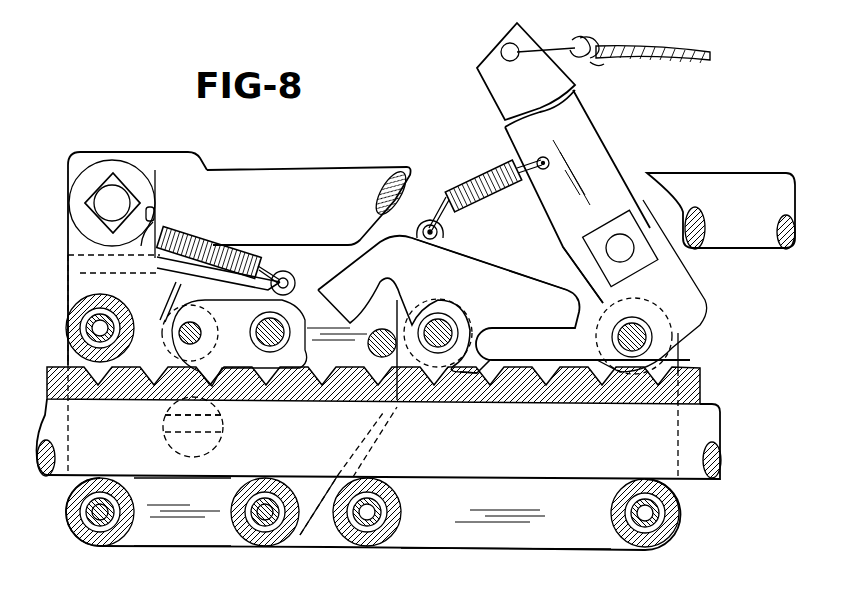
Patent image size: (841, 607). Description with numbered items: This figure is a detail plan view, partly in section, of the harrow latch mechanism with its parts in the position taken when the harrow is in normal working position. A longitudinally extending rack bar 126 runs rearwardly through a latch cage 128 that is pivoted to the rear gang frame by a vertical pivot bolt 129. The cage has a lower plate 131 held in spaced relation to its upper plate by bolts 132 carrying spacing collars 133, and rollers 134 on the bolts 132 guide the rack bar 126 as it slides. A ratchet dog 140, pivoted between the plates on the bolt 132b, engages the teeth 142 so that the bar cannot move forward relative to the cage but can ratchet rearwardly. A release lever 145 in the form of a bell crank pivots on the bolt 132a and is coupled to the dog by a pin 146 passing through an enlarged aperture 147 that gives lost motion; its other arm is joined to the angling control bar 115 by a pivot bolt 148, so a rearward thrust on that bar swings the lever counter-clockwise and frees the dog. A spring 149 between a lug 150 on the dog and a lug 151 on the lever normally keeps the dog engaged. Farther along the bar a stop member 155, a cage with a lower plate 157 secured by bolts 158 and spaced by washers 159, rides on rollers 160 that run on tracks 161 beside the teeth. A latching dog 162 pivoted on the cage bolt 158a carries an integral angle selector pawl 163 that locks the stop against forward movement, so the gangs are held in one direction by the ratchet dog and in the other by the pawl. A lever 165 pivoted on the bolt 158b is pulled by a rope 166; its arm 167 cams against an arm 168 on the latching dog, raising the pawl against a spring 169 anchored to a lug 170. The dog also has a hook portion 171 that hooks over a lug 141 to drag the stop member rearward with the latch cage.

The angling control bar 115 is at (248, 182).
The rack bar 126 is at (379, 423).
The latch cage 128 is at (144, 551).
The pivot bolt 129 is at (222, 441).
The lower plate 131 is at (205, 538).
The bolts 132 is at (95, 515).
The bolt 132a is at (90, 325).
The bolt 132b is at (285, 325).
The spacing collars 133 is at (93, 338).
The rollers 134 is at (75, 305).
The ratchet dog 140 is at (173, 413).
The lug 141 is at (396, 332).
The teeth 142 is at (365, 402).
The release lever 145 is at (70, 262).
The pin 146 is at (181, 325).
The enlarged aperture 147 is at (173, 293).
The pivot bolt 148 is at (113, 193).
The spring 149 is at (183, 235).
The lug 150 is at (283, 278).
The lug 151 is at (153, 212).
The stop member 155 is at (481, 554).
The lower plate 157 is at (575, 541).
The bolts 158 is at (388, 520).
The cage bolt 158a is at (452, 330).
The cage bolt 158b is at (635, 325).
The spacing washers 159 is at (438, 320).
The rollers 160 is at (465, 305).
The tracks 161 is at (680, 368).
The latching dog 162 is at (471, 254).
The angle selector pawl 163 is at (472, 400).
The lever 165 is at (590, 143).
The rope 166 is at (636, 52).
The arm 167 is at (556, 344).
The arm 168 is at (525, 288).
The spring 169 is at (478, 192).
The lug 170 is at (430, 224).
The hook portion 171 is at (504, 304).